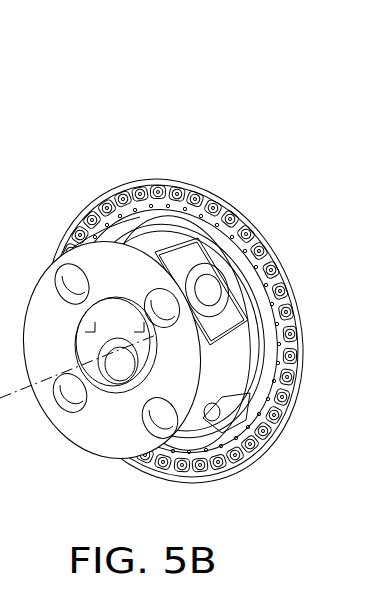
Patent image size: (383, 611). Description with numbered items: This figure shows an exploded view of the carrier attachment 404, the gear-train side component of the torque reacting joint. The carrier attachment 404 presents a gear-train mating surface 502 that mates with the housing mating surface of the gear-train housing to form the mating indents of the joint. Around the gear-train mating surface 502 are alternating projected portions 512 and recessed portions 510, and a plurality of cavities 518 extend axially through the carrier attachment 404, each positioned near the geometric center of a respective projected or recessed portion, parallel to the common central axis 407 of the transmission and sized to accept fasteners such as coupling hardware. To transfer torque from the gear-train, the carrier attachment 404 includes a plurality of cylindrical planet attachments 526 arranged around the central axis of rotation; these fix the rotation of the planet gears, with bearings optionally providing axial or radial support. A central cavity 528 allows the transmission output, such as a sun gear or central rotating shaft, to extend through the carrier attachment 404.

The carrier attachment 404 is at (173, 106).
The gear-train mating surface 502 is at (278, 246).
The recessed portions 510 is at (256, 238).
The projected portions 512 is at (88, 212).
The cavities 518 is at (153, 191).
The planet attachments 526 is at (70, 302).
The central cavity 528 is at (113, 309).
The common central axis 407 is at (24, 389).